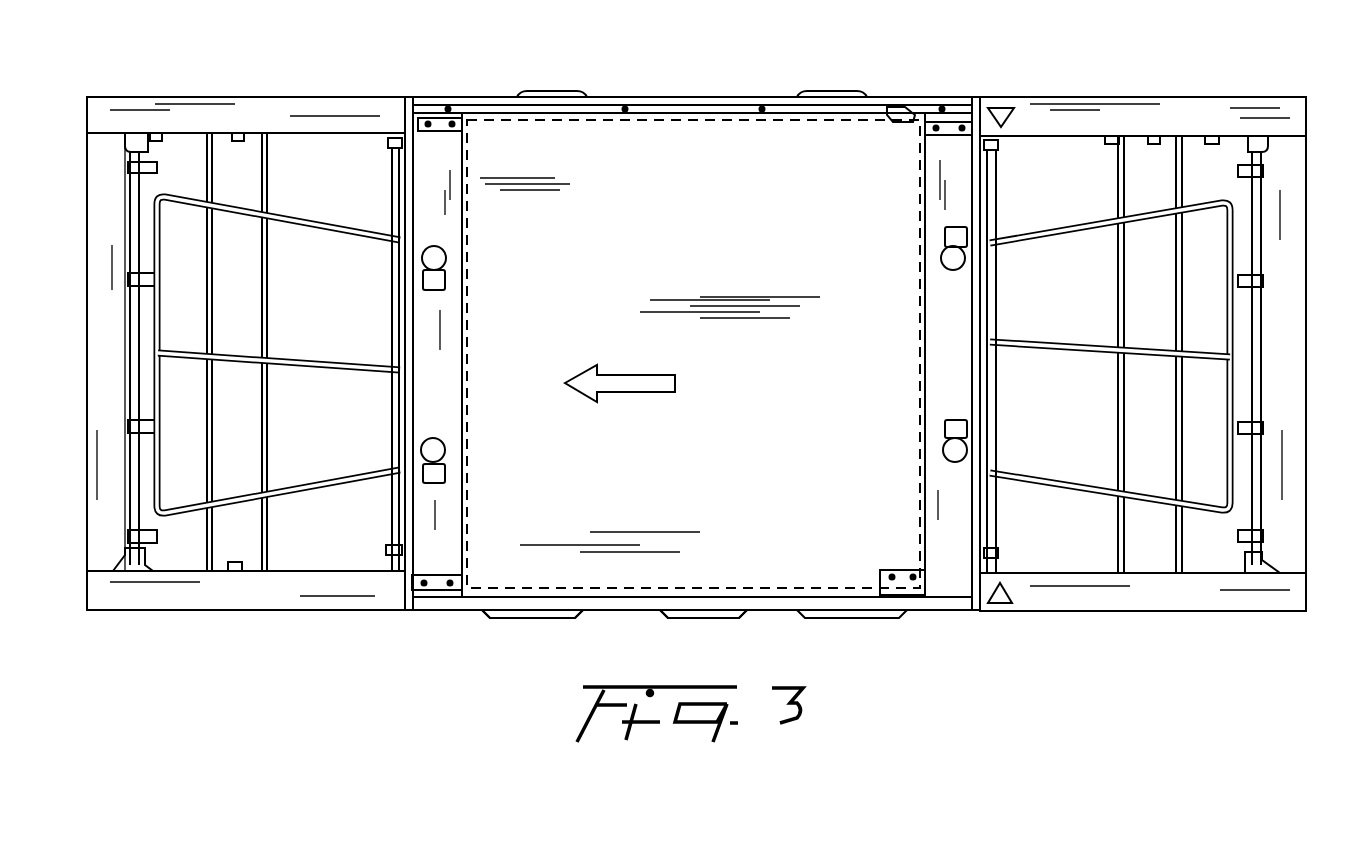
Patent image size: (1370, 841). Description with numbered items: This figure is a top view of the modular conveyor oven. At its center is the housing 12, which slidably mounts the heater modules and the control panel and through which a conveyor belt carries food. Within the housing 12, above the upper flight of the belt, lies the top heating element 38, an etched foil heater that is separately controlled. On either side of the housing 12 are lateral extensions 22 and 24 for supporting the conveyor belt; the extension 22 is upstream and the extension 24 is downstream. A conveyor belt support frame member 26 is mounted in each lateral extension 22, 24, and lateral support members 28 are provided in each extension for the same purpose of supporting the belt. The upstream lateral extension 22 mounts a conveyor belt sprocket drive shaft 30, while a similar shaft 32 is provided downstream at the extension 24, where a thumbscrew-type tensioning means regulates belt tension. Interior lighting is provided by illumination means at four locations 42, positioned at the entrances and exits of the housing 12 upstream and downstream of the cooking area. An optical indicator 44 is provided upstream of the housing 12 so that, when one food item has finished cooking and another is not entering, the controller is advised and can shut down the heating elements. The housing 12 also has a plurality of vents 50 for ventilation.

The housing 12 is at (708, 97).
The lateral extension 22 is at (1150, 97).
The lateral extension 24 is at (313, 97).
The conveyor belt support frame member 26 is at (327, 226).
The lateral support members 28 is at (262, 190).
The conveyor belt sprocket drive shaft 30 is at (1262, 200).
The shaft 32 is at (130, 193).
The top heating element 38 is at (716, 208).
The illumination means locations 42 is at (437, 281).
The optical indicator 44 is at (1002, 106).
The vents 50 is at (730, 621).